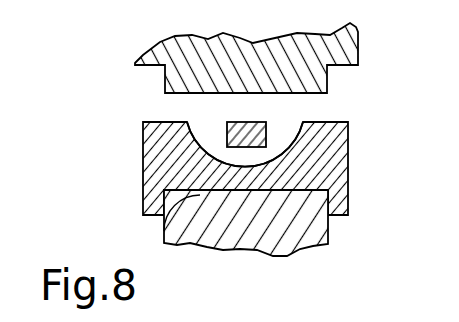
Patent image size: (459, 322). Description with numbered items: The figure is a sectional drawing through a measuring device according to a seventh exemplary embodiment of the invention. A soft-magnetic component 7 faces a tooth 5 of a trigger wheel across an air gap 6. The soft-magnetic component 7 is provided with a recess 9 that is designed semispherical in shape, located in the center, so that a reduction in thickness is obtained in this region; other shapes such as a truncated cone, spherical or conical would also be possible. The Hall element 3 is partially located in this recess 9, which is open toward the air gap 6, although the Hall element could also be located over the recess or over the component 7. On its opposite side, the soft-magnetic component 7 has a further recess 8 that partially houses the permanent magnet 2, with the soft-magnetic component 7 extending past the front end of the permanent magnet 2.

The permanent magnet 2 is at (305, 228).
The Hall element 3 is at (255, 123).
The tooth 5 is at (327, 82).
The air gap 6 is at (224, 116).
The soft-magnetic component 7 is at (150, 163).
The recess 8 is at (168, 230).
The recess 9 is at (204, 150).